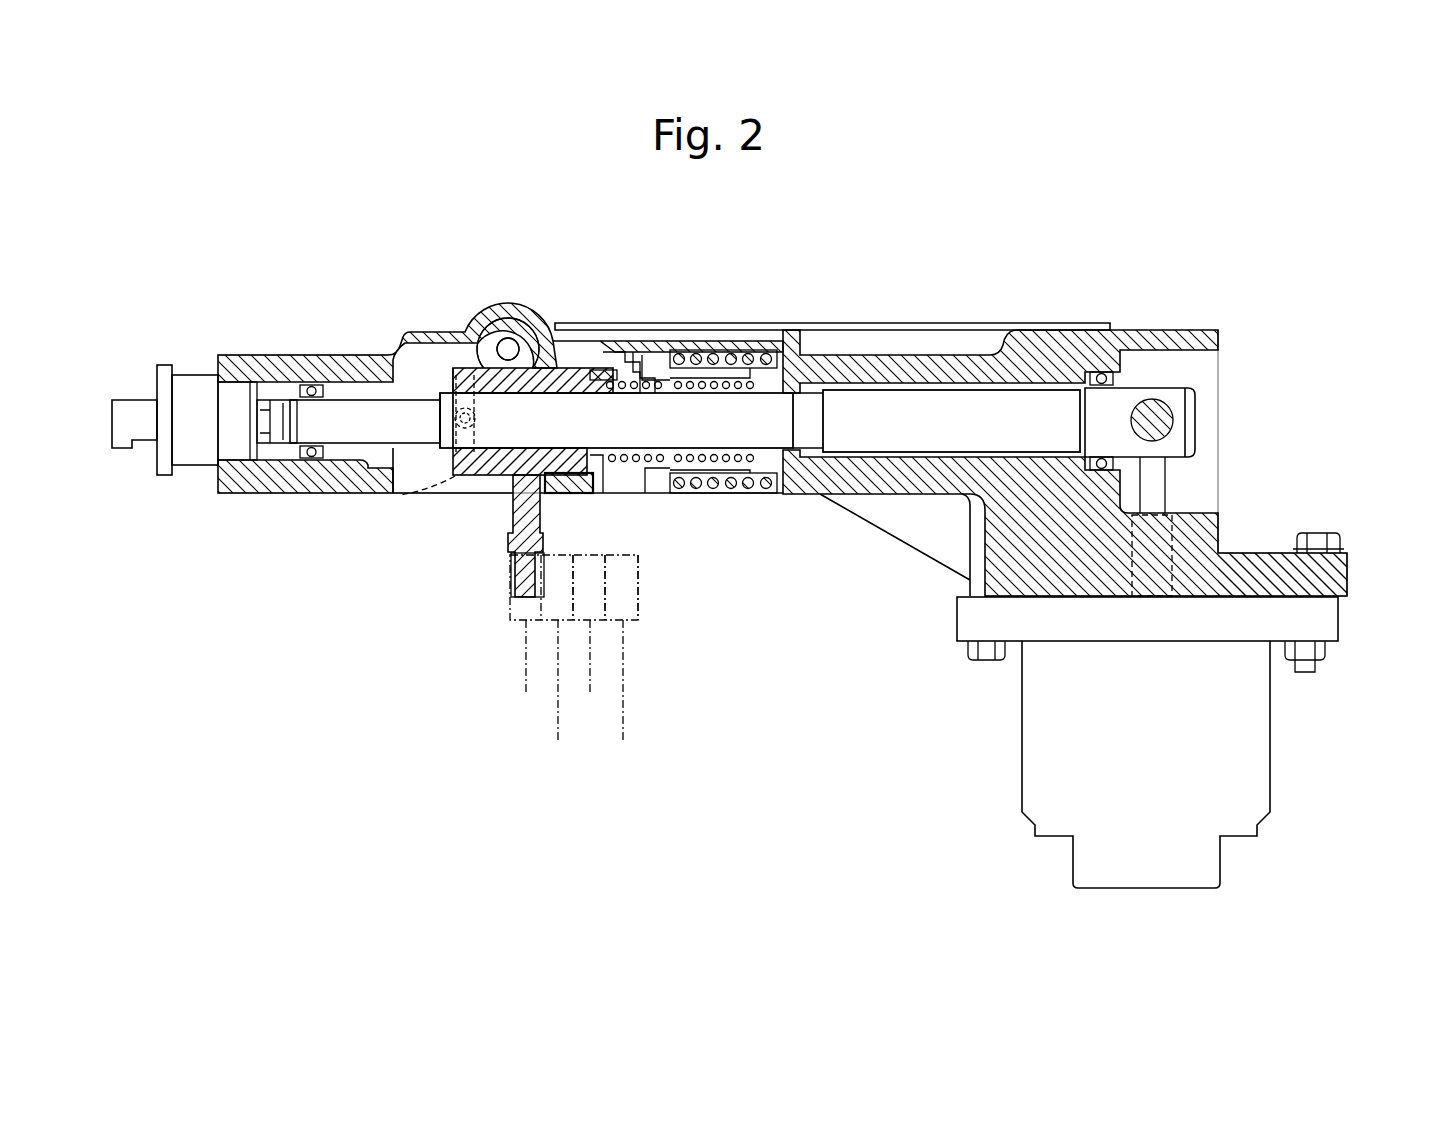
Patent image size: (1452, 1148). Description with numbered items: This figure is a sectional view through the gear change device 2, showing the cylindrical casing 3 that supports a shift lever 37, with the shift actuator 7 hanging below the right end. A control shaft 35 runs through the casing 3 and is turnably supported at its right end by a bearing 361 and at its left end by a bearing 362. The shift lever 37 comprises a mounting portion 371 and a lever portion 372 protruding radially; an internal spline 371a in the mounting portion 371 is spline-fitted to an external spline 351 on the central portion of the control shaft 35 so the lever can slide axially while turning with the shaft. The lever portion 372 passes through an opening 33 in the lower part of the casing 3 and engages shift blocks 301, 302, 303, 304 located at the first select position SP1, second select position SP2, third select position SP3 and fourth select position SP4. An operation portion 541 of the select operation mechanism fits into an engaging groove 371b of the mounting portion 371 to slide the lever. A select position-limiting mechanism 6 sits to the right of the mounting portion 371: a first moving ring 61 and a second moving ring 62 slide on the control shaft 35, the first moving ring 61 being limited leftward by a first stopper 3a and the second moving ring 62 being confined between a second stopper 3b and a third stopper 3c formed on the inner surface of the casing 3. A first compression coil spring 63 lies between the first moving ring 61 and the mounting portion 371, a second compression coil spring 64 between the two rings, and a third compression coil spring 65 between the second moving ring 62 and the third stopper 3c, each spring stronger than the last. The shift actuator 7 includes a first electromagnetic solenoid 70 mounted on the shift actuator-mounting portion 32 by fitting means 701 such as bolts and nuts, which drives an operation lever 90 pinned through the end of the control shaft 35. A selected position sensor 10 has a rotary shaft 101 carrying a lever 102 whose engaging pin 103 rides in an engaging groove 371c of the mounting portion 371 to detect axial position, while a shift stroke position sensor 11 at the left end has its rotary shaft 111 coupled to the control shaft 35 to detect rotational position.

The gear change device 2 is at (985, 255).
The casing 3 is at (868, 343).
The first stopper 3a is at (628, 345).
The second stopper 3b is at (680, 350).
The third stopper 3c is at (790, 497).
The select position-limiting mechanism 6 is at (710, 345).
The shift actuator 7 is at (1286, 724).
The selected position sensor 10 is at (496, 320).
The shift stroke position sensor 11 is at (198, 362).
The shift actuator-mounting portion 32 is at (1272, 568).
The opening 33 is at (468, 490).
The control shaft 35 is at (927, 400).
The shift lever 37 is at (500, 542).
The first moving ring 61 is at (662, 383).
The second moving ring 62 is at (720, 385).
The first compression coil spring 63 is at (640, 462).
The second compression coil spring 64 is at (717, 463).
The third compression coil spring 65 is at (753, 489).
The first electromagnetic solenoid 70 is at (1276, 802).
The operation lever 90 is at (1168, 420).
The rotary shaft 101 is at (507, 338).
The lever 102 is at (467, 363).
The engaging pin 103 is at (443, 393).
The rotary shaft 111 is at (283, 395).
The shift block 301 is at (510, 622).
The shift block 302 is at (553, 622).
The shift block 303 is at (600, 577).
The shift block 304 is at (638, 613).
The external spline 351 is at (752, 405).
The bearing 361 is at (1100, 372).
The bearing 362 is at (313, 386).
The mounting portion 371 is at (590, 385).
The internal spline 371a is at (560, 378).
The engaging groove 371b is at (580, 470).
The engaging groove 371c is at (455, 476).
The lever portion 372 is at (515, 578).
The operation portion 541 is at (578, 495).
The fitting means 701 is at (1342, 541).
The first select position SP1 is at (524, 669).
The second select position SP2 is at (557, 691).
The third select position SP3 is at (592, 669).
The fourth select position SP4 is at (641, 691).